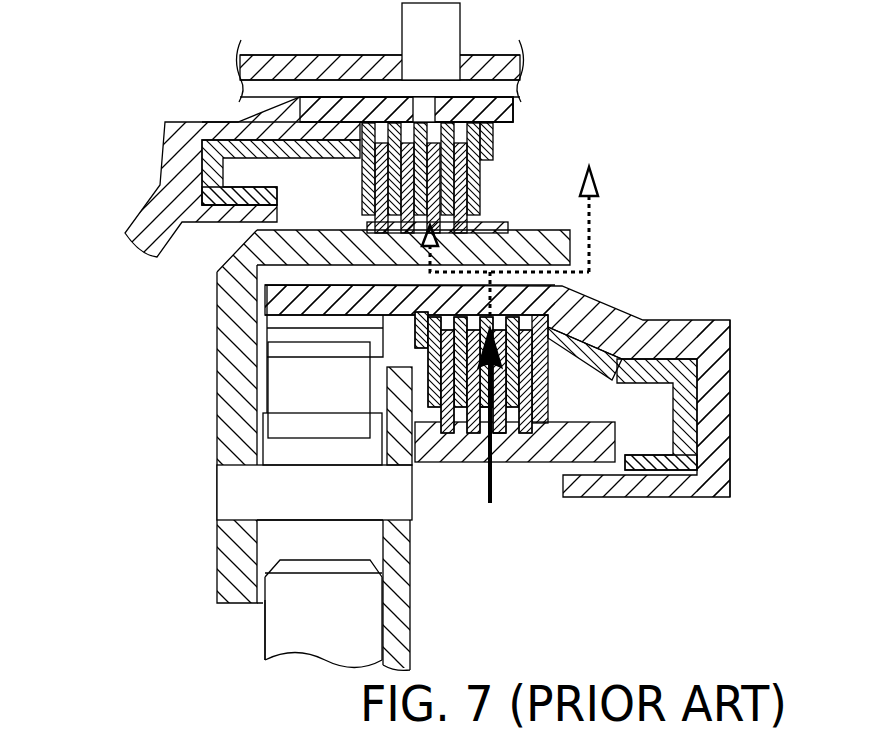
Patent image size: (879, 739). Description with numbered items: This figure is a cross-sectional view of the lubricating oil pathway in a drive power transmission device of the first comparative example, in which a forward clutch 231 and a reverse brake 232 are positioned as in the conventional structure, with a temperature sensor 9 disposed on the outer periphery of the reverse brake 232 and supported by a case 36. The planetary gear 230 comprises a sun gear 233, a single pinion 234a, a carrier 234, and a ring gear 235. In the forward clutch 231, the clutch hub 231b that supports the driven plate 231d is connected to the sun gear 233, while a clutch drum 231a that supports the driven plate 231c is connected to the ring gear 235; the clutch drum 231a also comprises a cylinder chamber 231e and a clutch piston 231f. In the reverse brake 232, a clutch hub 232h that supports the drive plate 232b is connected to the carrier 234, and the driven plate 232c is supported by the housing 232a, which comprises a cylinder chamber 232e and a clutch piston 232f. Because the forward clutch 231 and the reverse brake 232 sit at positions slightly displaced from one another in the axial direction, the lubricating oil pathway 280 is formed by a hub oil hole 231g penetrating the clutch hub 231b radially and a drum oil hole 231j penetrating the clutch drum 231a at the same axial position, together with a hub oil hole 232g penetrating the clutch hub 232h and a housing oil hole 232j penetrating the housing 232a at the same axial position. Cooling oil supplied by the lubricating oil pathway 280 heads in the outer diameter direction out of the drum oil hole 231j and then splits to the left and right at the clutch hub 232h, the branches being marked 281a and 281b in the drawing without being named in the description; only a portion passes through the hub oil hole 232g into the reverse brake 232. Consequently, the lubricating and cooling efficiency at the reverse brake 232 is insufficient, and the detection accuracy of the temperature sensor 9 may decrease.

The case 36 is at (256, 62).
The temperature sensor 9 is at (423, 25).
The reverse brake 232 is at (503, 157).
The housing 232a is at (313, 107).
The housing oil hole 232j is at (427, 107).
The cylinder chamber 232e is at (208, 162).
The clutch piston 232f is at (213, 188).
The drive plate 232b is at (408, 163).
The driven plate 232c is at (447, 162).
The hub oil hole 232g is at (487, 221).
The clutch hub 232h is at (560, 250).
The carrier 234 is at (233, 423).
The ring gear 235 is at (298, 375).
The single pinion 234a is at (290, 537).
The sun gear 233 is at (263, 612).
The planetary gear 230 is at (259, 638).
The forward clutch 231 is at (597, 400).
The drum oil hole 231j is at (540, 288).
The clutch drum 231a is at (685, 340).
The cylinder chamber 231e is at (682, 400).
The clutch piston 231f is at (687, 440).
The clutch hub 231b is at (640, 412).
The driven plate 231d is at (450, 425).
The driven plate 231c is at (545, 410).
The hub oil hole 231g is at (495, 435).
The magnetic path 281a is at (425, 255).
The magnetic path 281b is at (591, 207).
The lubricating oil pathway 280 is at (488, 500).